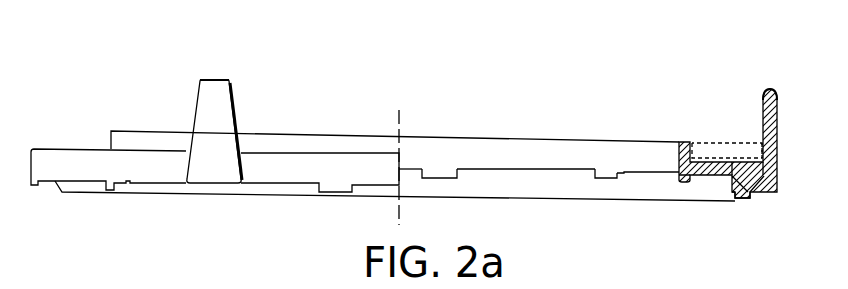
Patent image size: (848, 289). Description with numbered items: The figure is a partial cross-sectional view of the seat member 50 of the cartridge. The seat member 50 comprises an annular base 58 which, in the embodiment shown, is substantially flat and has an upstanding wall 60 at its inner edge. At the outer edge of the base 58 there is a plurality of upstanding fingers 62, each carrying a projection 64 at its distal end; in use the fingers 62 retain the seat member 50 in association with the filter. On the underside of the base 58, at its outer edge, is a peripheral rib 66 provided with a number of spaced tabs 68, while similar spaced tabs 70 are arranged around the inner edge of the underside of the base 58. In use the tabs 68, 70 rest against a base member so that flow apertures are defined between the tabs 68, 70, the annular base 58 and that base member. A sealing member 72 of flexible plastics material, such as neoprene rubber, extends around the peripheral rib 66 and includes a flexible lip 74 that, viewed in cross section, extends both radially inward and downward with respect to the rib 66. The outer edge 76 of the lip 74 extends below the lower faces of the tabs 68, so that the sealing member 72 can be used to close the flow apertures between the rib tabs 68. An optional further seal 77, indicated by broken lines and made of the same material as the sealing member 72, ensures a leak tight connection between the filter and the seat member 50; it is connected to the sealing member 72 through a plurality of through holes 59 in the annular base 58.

The seat member 50 is at (414, 70).
The annular base 58 is at (714, 158).
The through holes 59 is at (727, 176).
The upstanding wall 60 is at (530, 137).
The upstanding fingers 62 is at (200, 86).
The projection 64 is at (231, 88).
The peripheral rib 66 is at (777, 192).
The tabs 68 is at (113, 190).
The tabs 70 is at (448, 178).
The sealing member 72 is at (680, 214).
The flexible lip 74 is at (615, 179).
The outer edge 76 is at (203, 195).
The further seal 77 is at (763, 147).